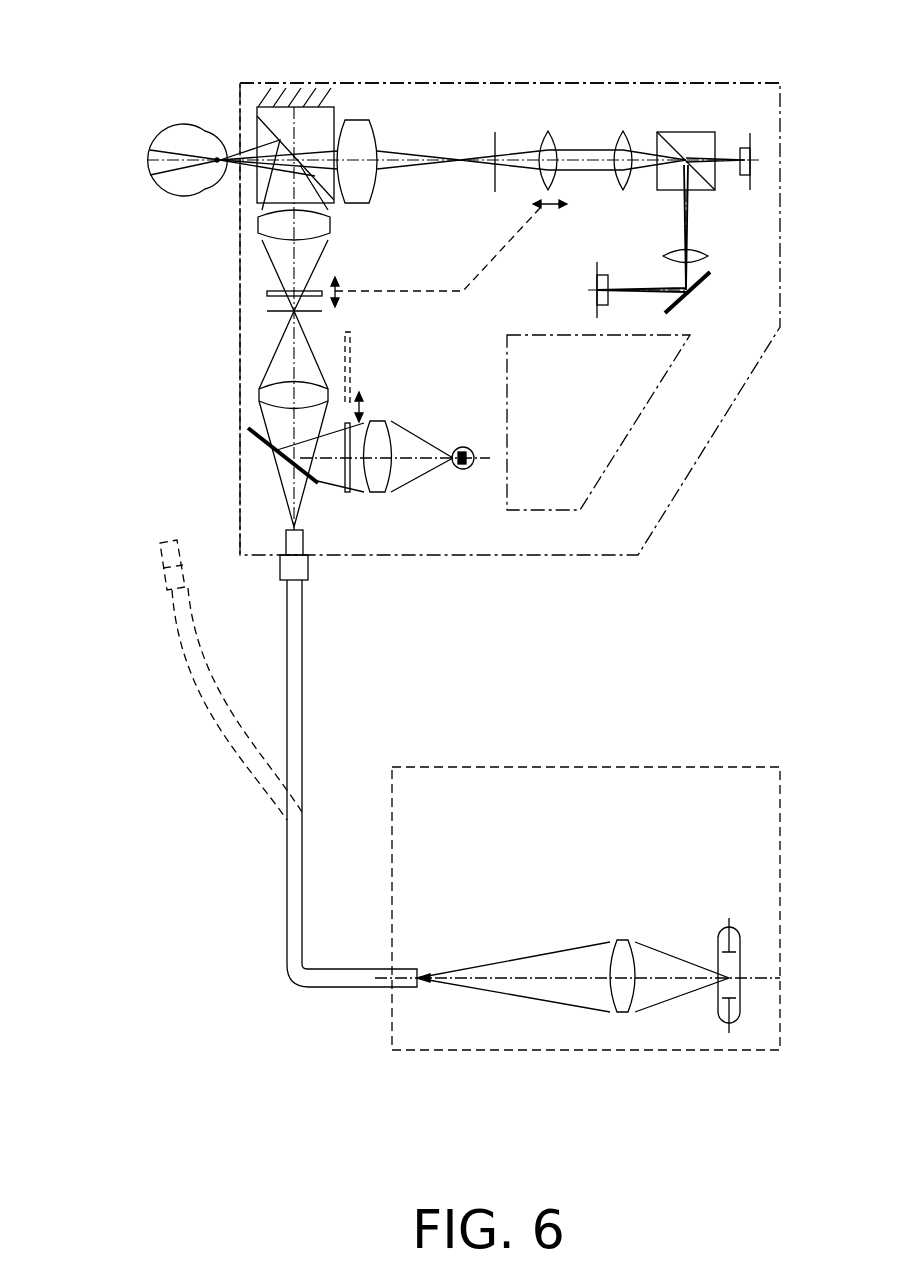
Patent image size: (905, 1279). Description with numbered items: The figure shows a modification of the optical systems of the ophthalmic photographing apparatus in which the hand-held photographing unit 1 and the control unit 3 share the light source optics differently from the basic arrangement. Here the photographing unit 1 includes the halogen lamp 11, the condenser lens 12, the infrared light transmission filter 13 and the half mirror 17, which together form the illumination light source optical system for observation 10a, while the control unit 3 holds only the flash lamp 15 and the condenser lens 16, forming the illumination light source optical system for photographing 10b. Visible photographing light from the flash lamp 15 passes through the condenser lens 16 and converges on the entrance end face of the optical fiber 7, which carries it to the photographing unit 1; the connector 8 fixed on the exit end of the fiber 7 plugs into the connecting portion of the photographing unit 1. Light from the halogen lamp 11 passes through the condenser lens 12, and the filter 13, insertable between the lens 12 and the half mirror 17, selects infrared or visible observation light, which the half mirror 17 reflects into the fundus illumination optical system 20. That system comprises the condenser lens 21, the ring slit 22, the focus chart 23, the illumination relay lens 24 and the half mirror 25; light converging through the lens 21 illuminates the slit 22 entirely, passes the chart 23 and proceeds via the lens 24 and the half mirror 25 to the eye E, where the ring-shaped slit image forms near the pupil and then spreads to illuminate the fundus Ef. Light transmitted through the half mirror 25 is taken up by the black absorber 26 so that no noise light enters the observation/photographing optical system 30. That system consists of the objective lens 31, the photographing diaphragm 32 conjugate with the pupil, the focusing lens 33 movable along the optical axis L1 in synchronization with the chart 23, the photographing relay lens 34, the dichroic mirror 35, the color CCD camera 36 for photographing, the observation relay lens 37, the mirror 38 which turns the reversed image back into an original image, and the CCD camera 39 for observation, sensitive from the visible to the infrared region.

The photographing unit 1 is at (747, 383).
The control unit 3 is at (700, 767).
The optical fiber 7 is at (303, 683).
The connector 8 is at (308, 565).
The illumination light source optical system for observation 10a is at (417, 512).
The illumination light source optical system for photographing 10b is at (578, 1020).
The halogen lamp 11 is at (457, 470).
The condenser lens 12 is at (378, 423).
The infrared light transmission filter 13 is at (350, 492).
The flash lamp 15 is at (742, 1005).
The condenser lens 16 is at (622, 1012).
The half mirror 17 is at (253, 437).
The fundus illumination optical system 20 is at (245, 350).
The condenser lens 21 is at (259, 393).
The ring slit 22 is at (268, 311).
The focus chart 23 is at (270, 292).
The illumination relay lens 24 is at (257, 220).
The half mirror 25 is at (257, 117).
The black absorber 26 is at (303, 92).
The observation/photographing optical system 30 is at (441, 112).
The objective lens 31 is at (365, 123).
The photographing diaphragm 32 is at (497, 133).
The focusing lens 33 is at (550, 133).
The photographing relay lens 34 is at (626, 133).
The dichroic mirror 35 is at (697, 131).
The color CCD camera 36 is at (757, 133).
The observation relay lens 37 is at (703, 249).
The mirror 38 is at (707, 278).
The CCD camera 39 is at (588, 290).
The eye to be examined E is at (167, 185).
The fundus Ef is at (147, 155).
The optical axis L1 is at (593, 163).